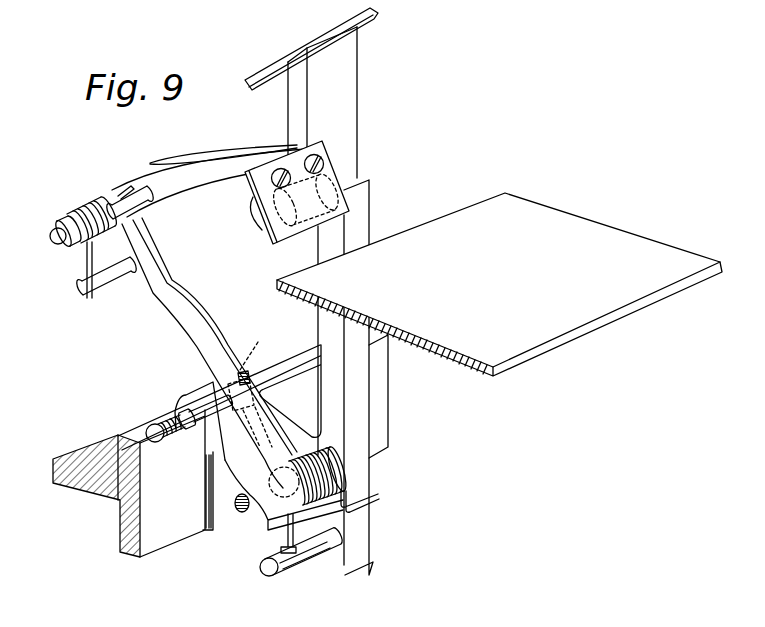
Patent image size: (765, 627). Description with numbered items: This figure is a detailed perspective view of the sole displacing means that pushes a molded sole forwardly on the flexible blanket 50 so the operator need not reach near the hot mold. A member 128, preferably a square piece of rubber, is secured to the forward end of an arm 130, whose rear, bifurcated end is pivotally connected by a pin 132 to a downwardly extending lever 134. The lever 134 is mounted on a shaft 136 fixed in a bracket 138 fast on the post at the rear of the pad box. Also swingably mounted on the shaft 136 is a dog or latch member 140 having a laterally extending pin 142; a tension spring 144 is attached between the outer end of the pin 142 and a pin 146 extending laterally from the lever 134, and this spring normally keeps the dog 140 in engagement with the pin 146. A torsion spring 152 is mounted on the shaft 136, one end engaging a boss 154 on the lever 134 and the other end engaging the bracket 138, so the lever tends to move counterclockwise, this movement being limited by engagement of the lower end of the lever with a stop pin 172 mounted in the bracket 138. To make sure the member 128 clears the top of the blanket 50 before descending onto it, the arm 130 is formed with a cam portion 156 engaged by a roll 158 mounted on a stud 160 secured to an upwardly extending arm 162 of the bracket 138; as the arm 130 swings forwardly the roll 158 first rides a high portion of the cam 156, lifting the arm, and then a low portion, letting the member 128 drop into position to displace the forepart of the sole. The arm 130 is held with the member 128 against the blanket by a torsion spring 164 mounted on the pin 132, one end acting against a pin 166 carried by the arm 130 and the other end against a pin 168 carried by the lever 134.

The flexible blanket 50 is at (623, 233).
The member 128 is at (322, 141).
The arm 130 is at (215, 183).
The pin 132 is at (47, 224).
The lever 134 is at (178, 325).
The shaft 136 is at (242, 512).
The bracket 138 is at (170, 537).
The dog or latch member 140 is at (207, 483).
The pin 142 is at (155, 424).
The tension spring 144 is at (183, 435).
The pin 146 is at (203, 386).
The torsion spring 152 is at (343, 473).
The boss 154 is at (219, 411).
The cam portion 156 is at (173, 158).
The roll 158 is at (262, 224).
The stud 160 is at (338, 193).
The upwardly extending arm 162 is at (357, 63).
The torsion spring 164 is at (85, 213).
The pin 166 is at (148, 210).
The pin 168 is at (108, 290).
The stop pin 172 is at (307, 563).